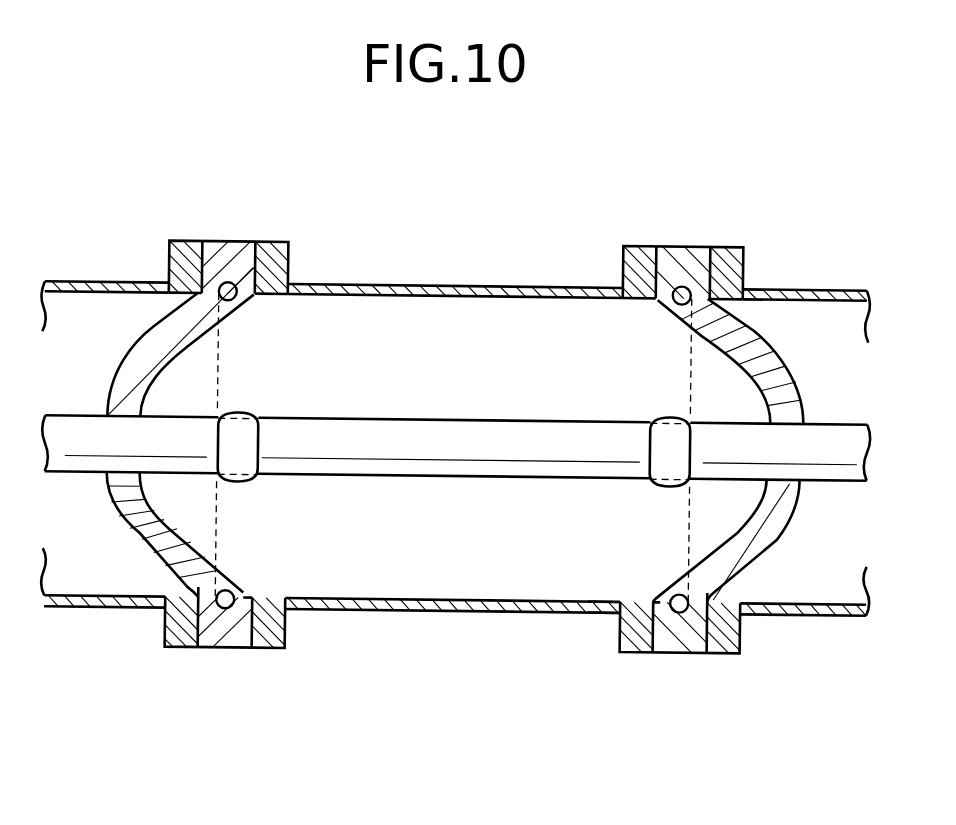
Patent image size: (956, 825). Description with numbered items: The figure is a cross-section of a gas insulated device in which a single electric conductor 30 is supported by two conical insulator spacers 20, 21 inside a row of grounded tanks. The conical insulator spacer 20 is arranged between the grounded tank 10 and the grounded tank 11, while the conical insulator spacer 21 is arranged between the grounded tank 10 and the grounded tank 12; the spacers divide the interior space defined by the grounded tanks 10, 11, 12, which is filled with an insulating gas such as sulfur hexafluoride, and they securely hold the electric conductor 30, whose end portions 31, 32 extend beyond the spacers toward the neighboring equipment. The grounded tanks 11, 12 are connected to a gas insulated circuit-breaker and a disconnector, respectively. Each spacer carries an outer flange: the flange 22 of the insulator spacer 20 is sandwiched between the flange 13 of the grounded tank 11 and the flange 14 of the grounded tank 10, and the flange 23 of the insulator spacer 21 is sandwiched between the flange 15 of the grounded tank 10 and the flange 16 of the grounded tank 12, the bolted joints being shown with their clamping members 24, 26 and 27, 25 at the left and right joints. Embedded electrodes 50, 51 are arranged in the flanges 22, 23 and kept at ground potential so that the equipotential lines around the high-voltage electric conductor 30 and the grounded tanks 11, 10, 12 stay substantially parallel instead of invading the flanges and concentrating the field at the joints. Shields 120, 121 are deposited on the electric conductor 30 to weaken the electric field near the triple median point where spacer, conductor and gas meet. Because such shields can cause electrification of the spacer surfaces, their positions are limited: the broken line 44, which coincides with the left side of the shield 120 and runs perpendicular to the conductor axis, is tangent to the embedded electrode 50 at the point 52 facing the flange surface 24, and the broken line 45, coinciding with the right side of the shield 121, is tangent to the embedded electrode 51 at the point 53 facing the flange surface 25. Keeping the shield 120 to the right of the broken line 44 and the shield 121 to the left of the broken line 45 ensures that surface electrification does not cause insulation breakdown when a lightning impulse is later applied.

The grounded tank 10 is at (456, 262).
The grounded tank 11 is at (105, 280).
The grounded tank 12 is at (806, 285).
The flange of grounded tank 11 13 is at (103, 612).
The flange of grounded tank 10 14 is at (452, 639).
The flange of grounded tank 10 15 is at (593, 640).
The flange of grounded tank 12 16 is at (804, 623).
The conical insulator spacer 20 is at (163, 342).
The conical insulator spacer 21 is at (752, 361).
The flange of insulator spacer 20 22 is at (220, 647).
The flange of insulator spacer 21 23 is at (674, 651).
The flange surface 24 is at (182, 652).
The flange surface 25 is at (720, 656).
The flange block 26 is at (267, 653).
The flange block 27 is at (633, 655).
The electric conductor 30 is at (451, 446).
The left shaft end 31 is at (63, 473).
The right shaft end 32 is at (846, 480).
The broken line 44 is at (189, 445).
The broken line 45 is at (716, 451).
The embedded electrode 50 is at (255, 568).
The embedded electrode 51 is at (655, 570).
The point 52 is at (170, 535).
The point 53 is at (730, 541).
The shield 120 is at (257, 417).
The shield 121 is at (647, 421).